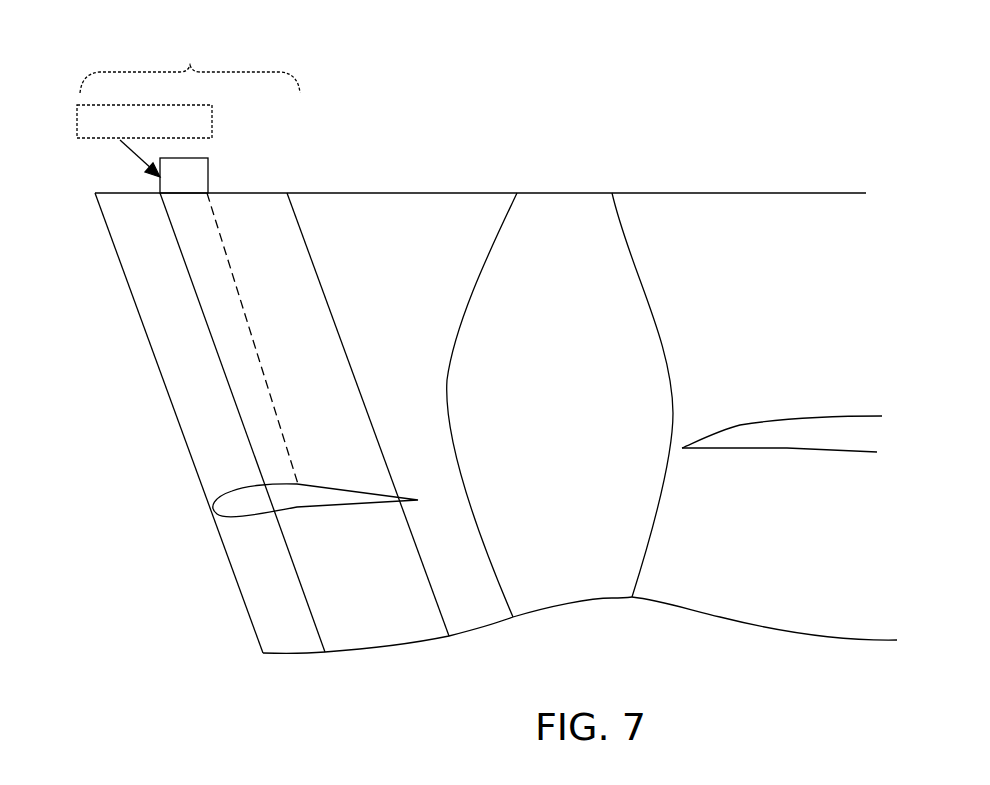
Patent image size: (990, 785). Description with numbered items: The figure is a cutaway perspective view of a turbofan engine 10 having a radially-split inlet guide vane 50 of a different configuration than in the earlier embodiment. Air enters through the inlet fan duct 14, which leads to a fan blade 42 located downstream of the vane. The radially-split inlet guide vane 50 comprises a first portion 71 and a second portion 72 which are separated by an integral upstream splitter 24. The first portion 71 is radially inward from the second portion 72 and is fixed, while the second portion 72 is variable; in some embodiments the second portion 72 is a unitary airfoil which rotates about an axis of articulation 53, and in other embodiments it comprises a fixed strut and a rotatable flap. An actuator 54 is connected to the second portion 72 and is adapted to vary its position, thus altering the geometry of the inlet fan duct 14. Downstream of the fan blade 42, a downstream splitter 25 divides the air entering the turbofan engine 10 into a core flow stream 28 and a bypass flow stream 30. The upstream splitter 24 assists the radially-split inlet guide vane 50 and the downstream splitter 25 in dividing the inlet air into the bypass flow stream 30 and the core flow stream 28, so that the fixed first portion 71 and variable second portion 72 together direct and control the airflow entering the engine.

The turbofan engine 10 is at (626, 116).
The inlet fan duct 14 is at (190, 67).
The upstream splitter 24 is at (223, 490).
The downstream splitter 25 is at (781, 446).
The core flow stream 28 is at (721, 547).
The bypass flow stream 30 is at (762, 279).
The fan blade 42 is at (543, 400).
The radially-split inlet guide vane 50 is at (370, 287).
The axis of articulation 53 is at (227, 278).
The actuator 54 is at (213, 128).
The first portion 71 is at (345, 590).
The second portion 72 is at (286, 347).